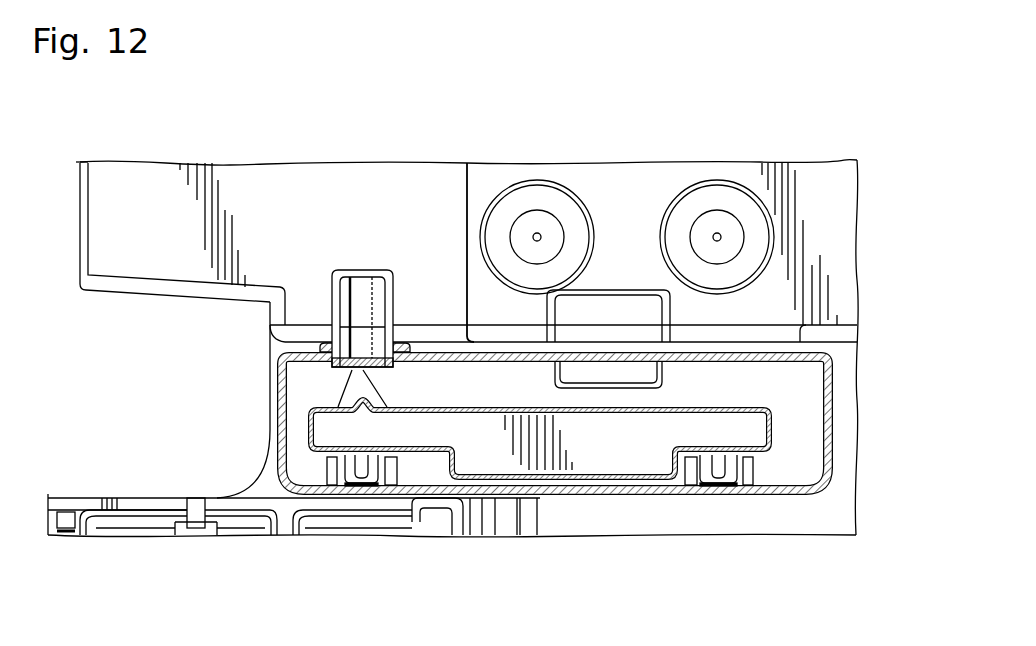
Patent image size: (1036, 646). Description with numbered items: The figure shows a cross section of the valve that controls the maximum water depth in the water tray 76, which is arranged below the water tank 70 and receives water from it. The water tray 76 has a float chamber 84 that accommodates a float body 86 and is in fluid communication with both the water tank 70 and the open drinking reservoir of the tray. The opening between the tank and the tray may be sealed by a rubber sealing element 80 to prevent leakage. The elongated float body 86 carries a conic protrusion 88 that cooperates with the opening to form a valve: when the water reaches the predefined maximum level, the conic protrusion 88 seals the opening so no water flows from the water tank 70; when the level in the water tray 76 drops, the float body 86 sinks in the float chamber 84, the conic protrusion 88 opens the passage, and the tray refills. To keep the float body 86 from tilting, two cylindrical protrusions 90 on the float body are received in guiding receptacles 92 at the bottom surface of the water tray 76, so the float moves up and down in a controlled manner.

The water tank 70 is at (815, 248).
The water tray 76 is at (840, 360).
The sealing element 80 is at (323, 350).
The float chamber 84 is at (808, 459).
The float body 86 is at (740, 435).
The conic protrusion 88 is at (360, 392).
The cylindrical protrusions 90 is at (376, 485).
The guiding receptacles 92 is at (337, 470).